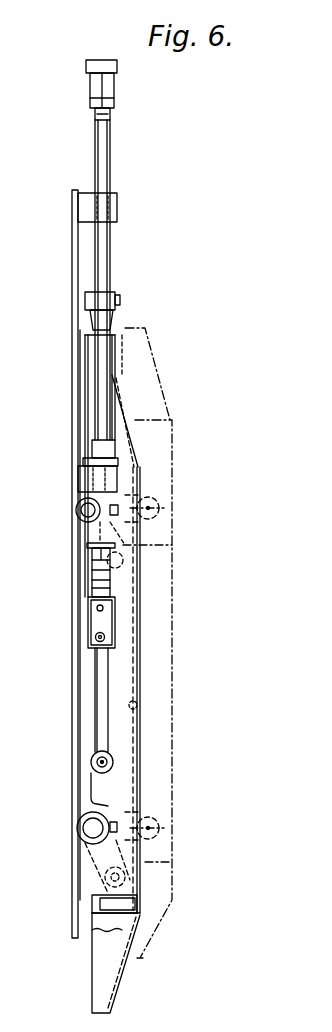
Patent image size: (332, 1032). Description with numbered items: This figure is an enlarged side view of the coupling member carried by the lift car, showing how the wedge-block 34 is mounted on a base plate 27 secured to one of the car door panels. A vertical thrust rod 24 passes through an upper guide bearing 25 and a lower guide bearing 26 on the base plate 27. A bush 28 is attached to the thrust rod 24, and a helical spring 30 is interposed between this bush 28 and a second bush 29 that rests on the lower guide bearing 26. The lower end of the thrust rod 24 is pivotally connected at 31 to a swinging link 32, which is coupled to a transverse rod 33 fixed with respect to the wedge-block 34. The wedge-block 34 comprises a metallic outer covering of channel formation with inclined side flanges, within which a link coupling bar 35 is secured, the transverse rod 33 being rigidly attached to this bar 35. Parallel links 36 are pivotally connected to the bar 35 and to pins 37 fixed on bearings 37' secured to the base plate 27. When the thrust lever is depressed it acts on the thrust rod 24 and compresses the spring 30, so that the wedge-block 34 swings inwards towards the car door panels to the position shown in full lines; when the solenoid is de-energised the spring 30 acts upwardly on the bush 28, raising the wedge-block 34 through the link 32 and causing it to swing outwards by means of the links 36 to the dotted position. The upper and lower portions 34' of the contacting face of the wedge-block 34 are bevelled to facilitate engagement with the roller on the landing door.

The thrust rod 24 is at (110, 148).
The guide bearing 25 is at (117, 208).
The guide bearing 26 is at (78, 479).
The base plate 27 is at (73, 422).
The bush 28 is at (115, 293).
The bush 29 is at (90, 449).
The helical spring 30 is at (112, 311).
The pivotal connection 31 is at (88, 640).
The swinging link 32 is at (98, 675).
The transverse rod 33 is at (91, 762).
The wedge-block 34 is at (162, 643).
The bevelled portions of the wedge-block 34' is at (109, 722).
The link coupling bar 35 is at (110, 906).
The parallel links 36 is at (123, 545).
The pins 37 is at (80, 671).
The bearings 37' is at (86, 694).